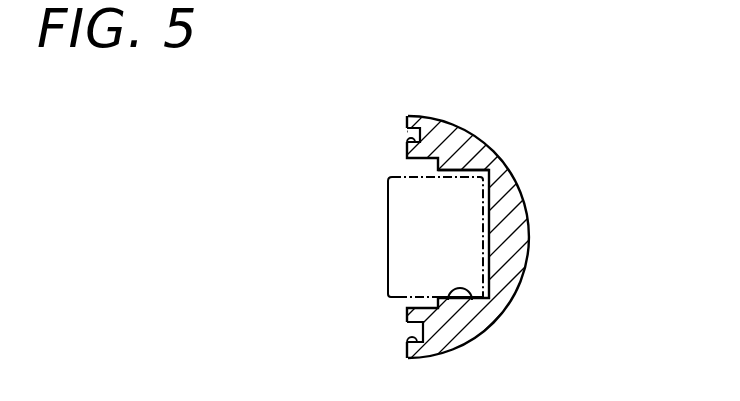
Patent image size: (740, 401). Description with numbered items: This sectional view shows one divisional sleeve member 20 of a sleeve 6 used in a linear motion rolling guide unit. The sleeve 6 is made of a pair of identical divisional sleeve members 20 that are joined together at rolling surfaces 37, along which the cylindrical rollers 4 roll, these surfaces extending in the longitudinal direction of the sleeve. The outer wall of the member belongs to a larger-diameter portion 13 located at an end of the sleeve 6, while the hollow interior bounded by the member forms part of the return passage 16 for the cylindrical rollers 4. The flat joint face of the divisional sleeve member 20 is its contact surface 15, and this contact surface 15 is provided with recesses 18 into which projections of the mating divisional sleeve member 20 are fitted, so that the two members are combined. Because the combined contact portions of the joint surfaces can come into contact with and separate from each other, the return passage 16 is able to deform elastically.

The cylindrical roller 4 is at (403, 210).
The sleeve 6 is at (492, 200).
The larger-diameter portion 13 is at (529, 233).
The contact surface 15 is at (405, 123).
The return passage 16 is at (422, 237).
The recess 18 is at (401, 141).
The divisional sleeve member 20 is at (470, 132).
The rolling surface 37 is at (471, 303).